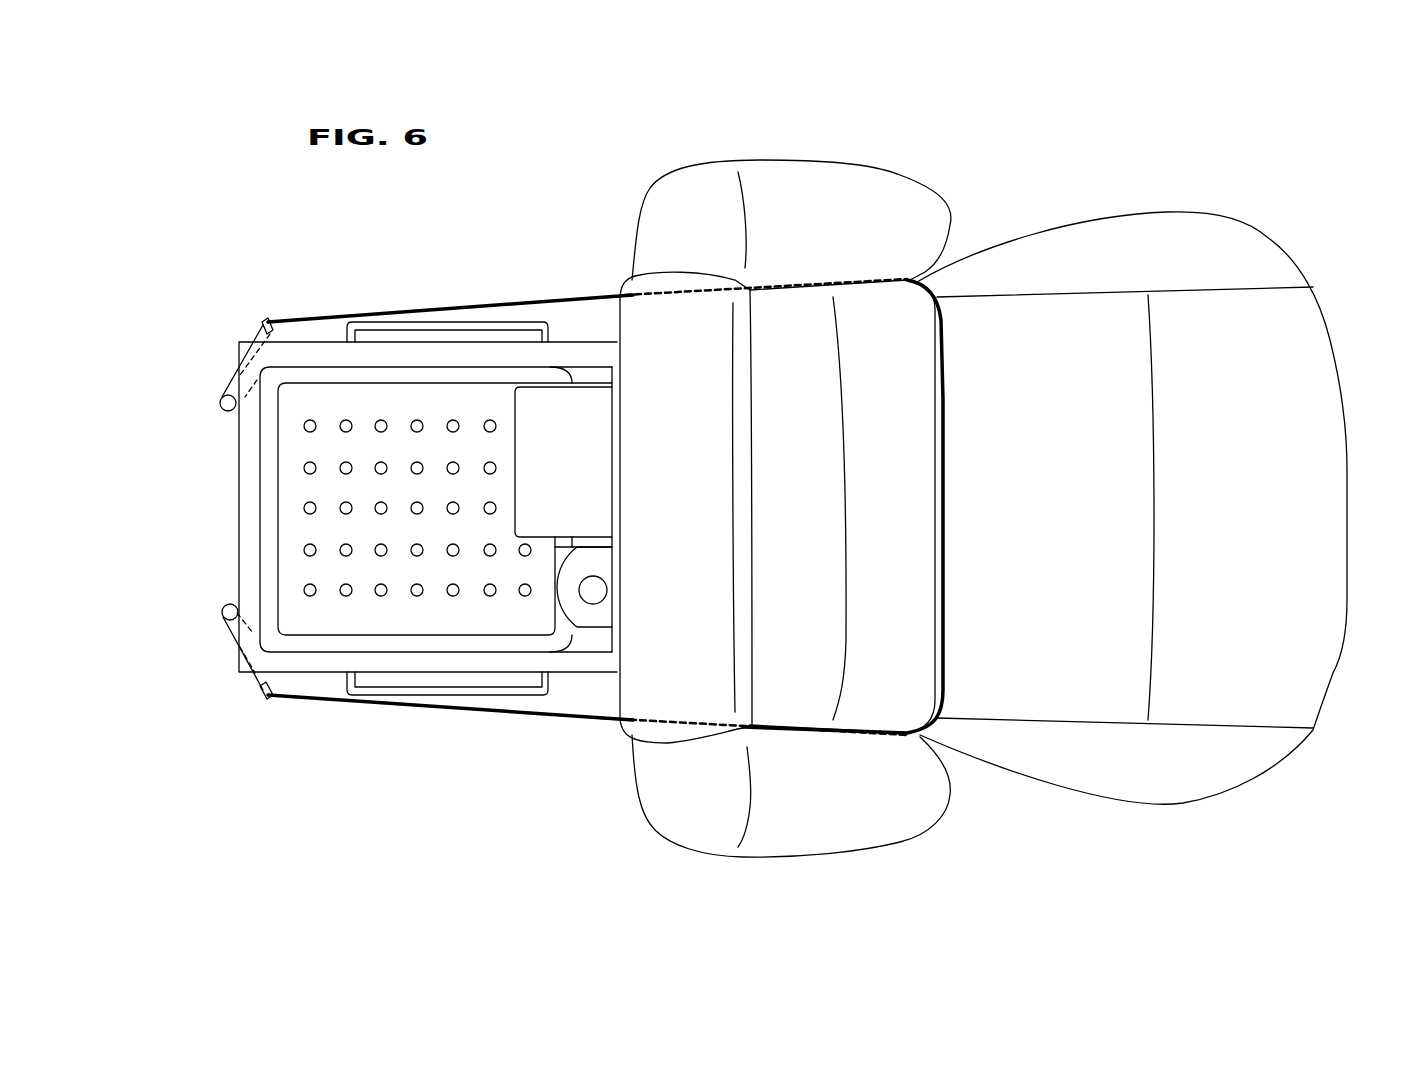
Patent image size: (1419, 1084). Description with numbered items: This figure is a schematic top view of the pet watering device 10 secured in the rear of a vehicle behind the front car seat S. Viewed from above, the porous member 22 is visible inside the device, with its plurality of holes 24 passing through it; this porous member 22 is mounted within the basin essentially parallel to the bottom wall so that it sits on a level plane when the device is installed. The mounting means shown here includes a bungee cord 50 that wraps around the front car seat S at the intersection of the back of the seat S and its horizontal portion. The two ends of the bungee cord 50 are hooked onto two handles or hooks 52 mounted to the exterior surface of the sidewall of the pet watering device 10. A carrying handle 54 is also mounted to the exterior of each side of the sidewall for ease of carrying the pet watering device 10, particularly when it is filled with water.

The pet watering device 10 is at (216, 491).
The porous member 22 is at (328, 528).
The holes 24 is at (382, 425).
The bungee cord 50 is at (475, 302).
The hooks 52 is at (227, 405).
The carrying handle 54 is at (410, 325).
The seat S is at (1032, 220).